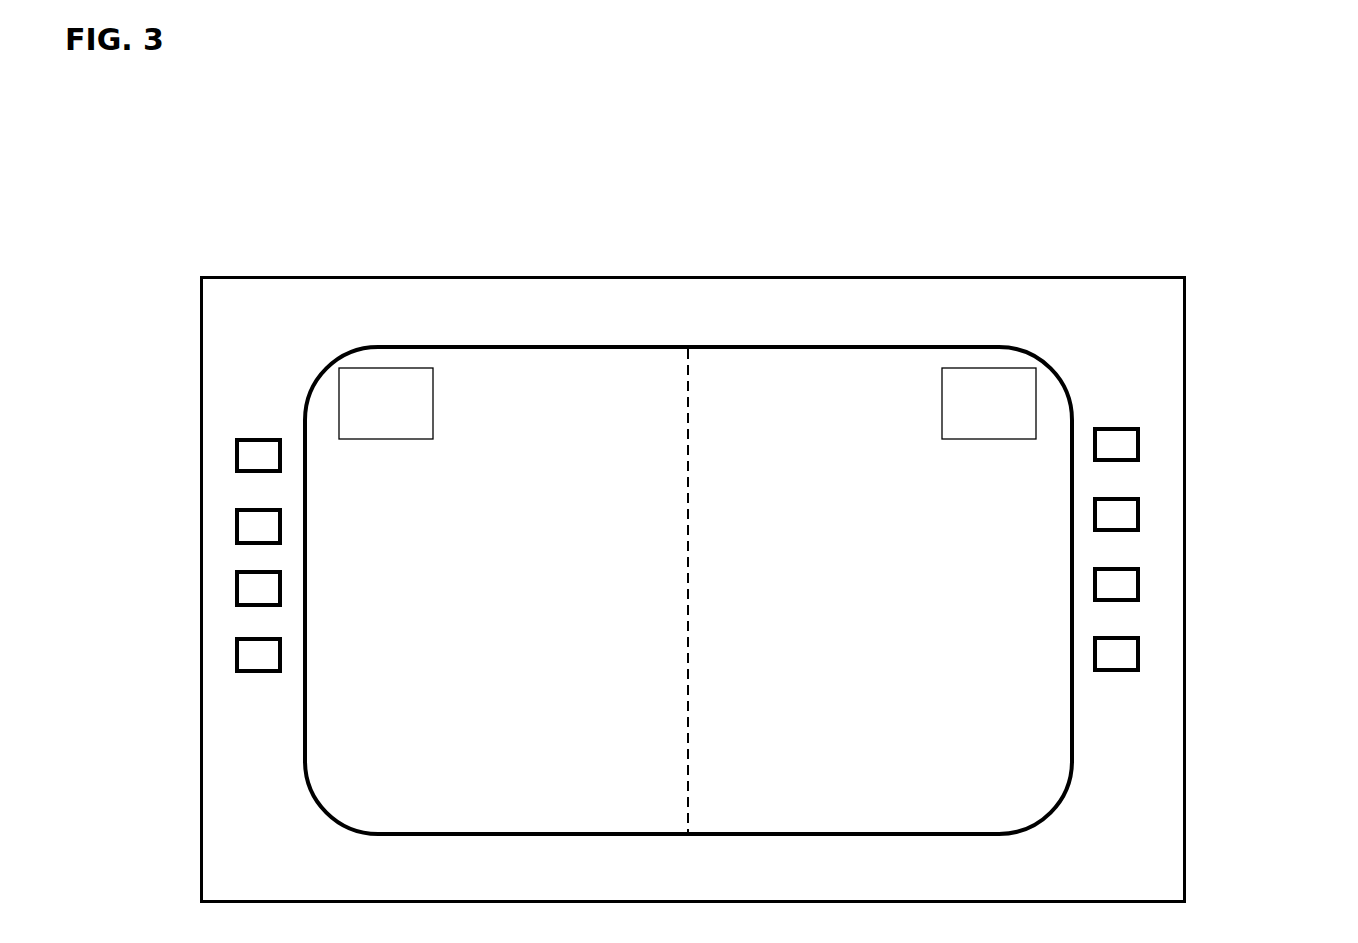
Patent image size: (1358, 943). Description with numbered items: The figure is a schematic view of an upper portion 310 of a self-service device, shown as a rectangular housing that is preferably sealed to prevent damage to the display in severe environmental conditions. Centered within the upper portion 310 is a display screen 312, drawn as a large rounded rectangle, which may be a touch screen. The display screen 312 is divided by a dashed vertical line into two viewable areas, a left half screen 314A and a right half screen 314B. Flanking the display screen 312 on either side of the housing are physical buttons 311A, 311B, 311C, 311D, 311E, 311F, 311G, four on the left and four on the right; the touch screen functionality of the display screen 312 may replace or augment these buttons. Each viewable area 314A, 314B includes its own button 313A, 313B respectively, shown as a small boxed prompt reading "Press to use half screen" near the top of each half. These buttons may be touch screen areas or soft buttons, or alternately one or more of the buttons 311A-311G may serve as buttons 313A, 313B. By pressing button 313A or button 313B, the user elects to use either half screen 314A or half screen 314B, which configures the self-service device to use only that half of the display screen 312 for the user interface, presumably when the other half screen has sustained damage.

The upper portion of self-service device 310 is at (200, 358).
The button 311A is at (235, 457).
The button 311B is at (235, 527).
The button 311C is at (235, 590).
The button 311D is at (235, 655).
The button 311E is at (1140, 515).
The button 311F is at (1140, 585).
The button 311G is at (1140, 655).
The display screen 312 is at (792, 345).
The button 313A is at (385, 440).
The button 313B is at (992, 440).
The viewable area 314A is at (595, 405).
The viewable area 314B is at (838, 392).